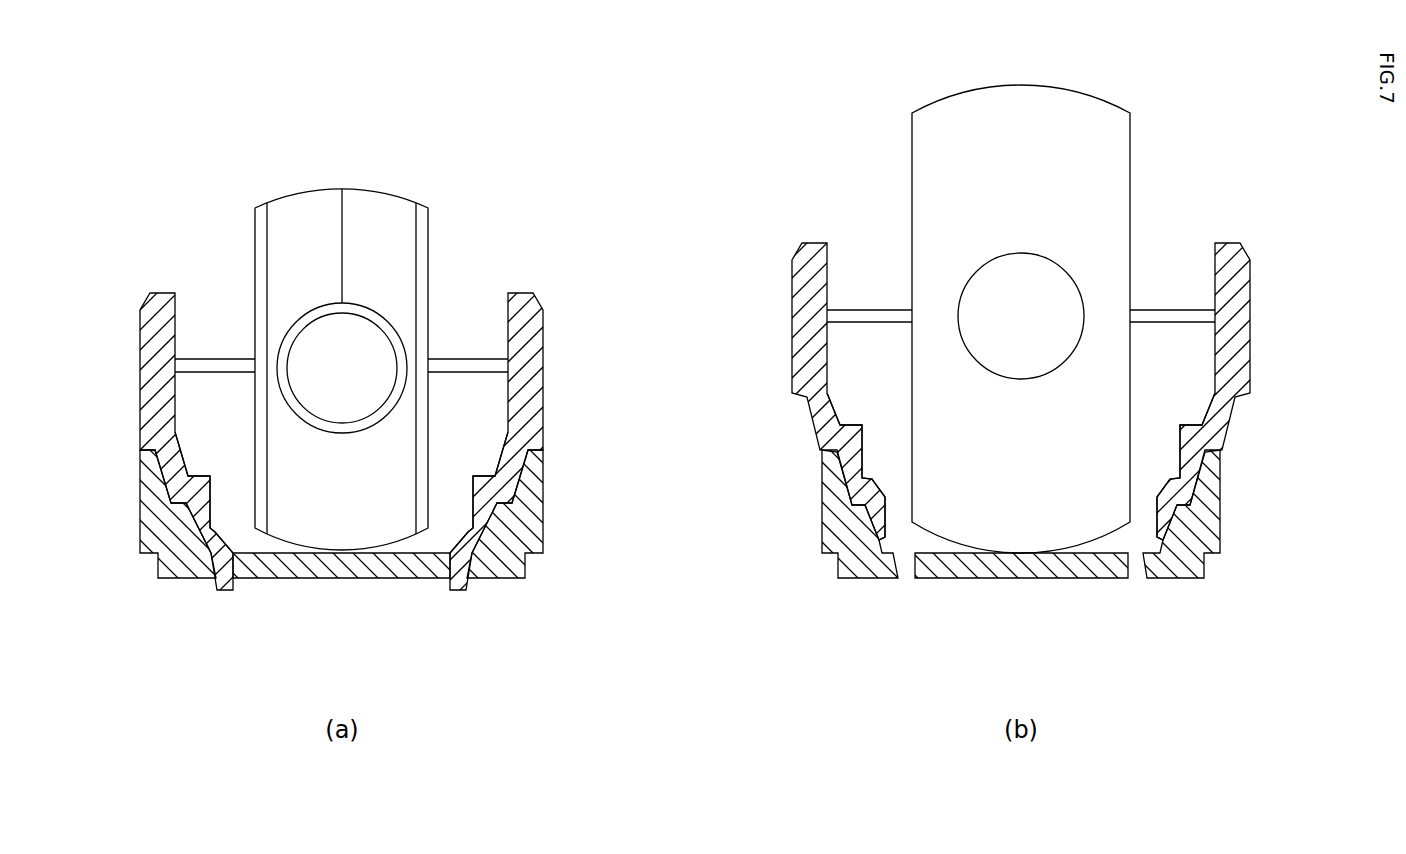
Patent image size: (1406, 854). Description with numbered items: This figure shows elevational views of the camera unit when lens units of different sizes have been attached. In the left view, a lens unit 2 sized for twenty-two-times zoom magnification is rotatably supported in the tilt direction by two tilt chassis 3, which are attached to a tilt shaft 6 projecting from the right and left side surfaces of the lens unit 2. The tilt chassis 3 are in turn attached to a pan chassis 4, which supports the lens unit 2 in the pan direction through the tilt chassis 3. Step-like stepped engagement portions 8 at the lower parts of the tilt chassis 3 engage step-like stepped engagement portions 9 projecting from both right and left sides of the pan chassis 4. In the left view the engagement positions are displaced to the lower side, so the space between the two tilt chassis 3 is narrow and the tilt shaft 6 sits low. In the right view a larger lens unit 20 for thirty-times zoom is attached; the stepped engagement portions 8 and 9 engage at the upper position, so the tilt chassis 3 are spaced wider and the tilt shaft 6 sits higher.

The lens unit 2 is at (399, 186).
The lens unit 20 is at (1102, 92).
The tilt chassis 3 is at (140, 296).
The pan chassis 4 is at (343, 580).
The tilt shaft 6 is at (202, 352).
The stepped engagement portion 8 is at (167, 513).
The stepped engagement portion 9 is at (198, 474).